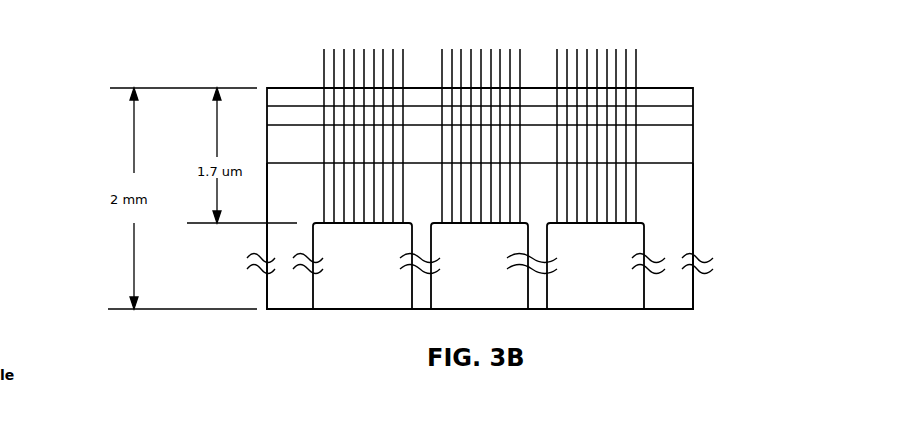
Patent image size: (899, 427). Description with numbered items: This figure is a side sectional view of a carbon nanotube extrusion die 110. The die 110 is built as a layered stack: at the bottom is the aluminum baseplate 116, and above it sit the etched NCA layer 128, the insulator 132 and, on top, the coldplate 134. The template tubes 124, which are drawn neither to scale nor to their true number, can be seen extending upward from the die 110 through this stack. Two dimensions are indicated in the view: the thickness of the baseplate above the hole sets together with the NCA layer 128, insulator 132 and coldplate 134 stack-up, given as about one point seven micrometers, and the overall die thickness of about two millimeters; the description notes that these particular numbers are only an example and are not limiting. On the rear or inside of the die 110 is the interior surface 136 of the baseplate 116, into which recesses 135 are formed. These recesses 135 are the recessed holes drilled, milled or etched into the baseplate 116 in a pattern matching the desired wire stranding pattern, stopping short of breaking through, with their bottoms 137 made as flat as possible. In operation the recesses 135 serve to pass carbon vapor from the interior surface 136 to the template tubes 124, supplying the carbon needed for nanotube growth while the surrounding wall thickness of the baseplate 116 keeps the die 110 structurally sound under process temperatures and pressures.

The die 110 is at (238, 57).
The template tubes 124 is at (643, 62).
The coldplate 134 is at (682, 98).
The insulator 132 is at (672, 117).
The etched NCA layer 128 is at (673, 145).
The baseplate 116 is at (653, 183).
The interior surface 136 is at (297, 311).
The bottoms 137 is at (375, 224).
The recesses 135 is at (613, 290).